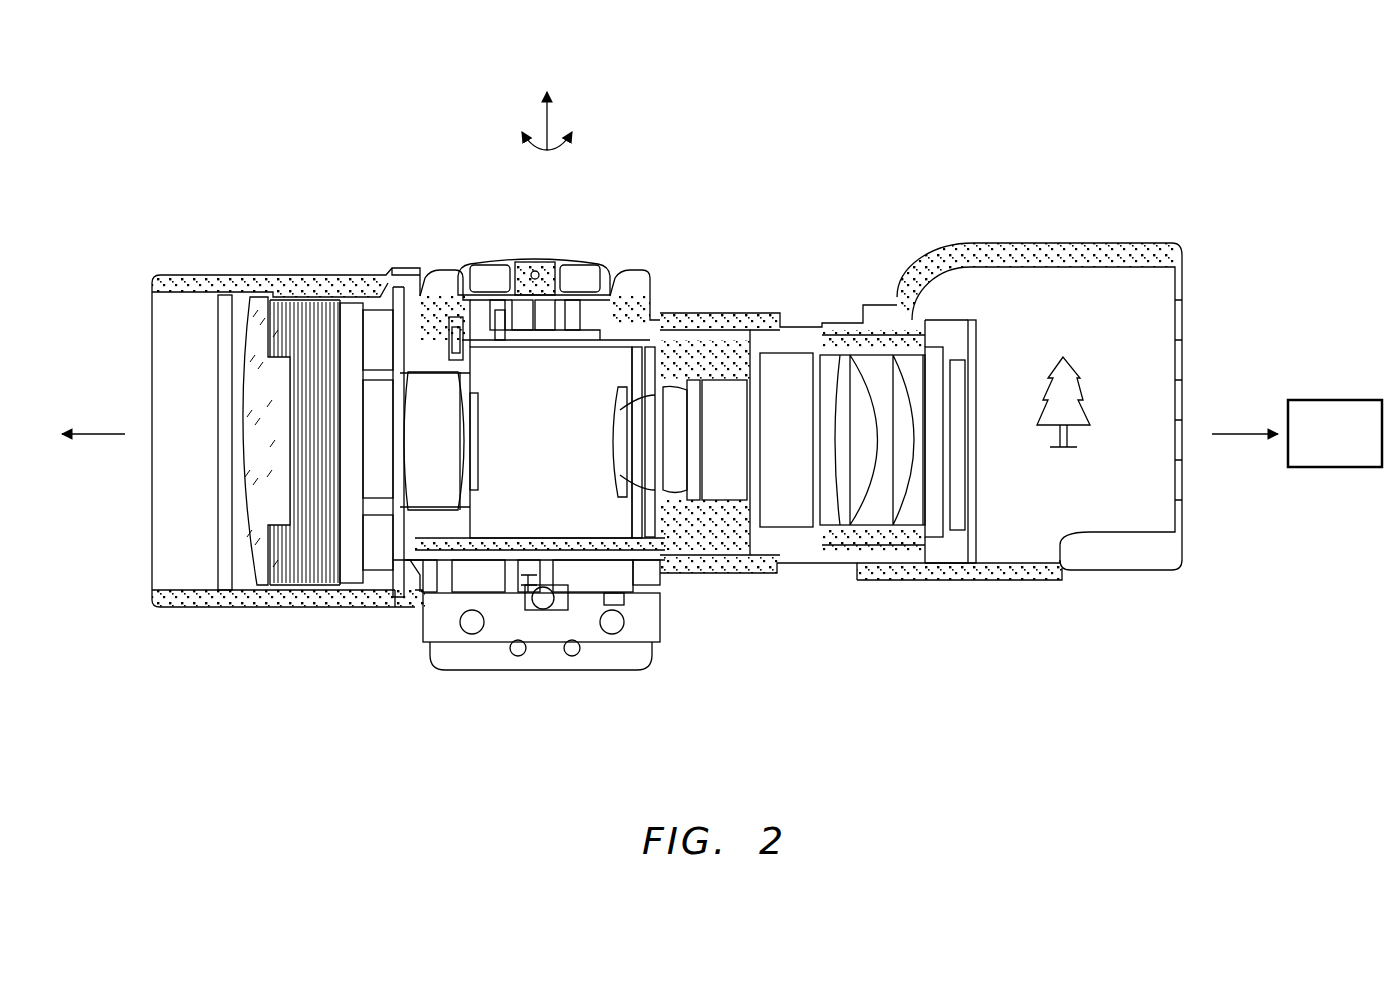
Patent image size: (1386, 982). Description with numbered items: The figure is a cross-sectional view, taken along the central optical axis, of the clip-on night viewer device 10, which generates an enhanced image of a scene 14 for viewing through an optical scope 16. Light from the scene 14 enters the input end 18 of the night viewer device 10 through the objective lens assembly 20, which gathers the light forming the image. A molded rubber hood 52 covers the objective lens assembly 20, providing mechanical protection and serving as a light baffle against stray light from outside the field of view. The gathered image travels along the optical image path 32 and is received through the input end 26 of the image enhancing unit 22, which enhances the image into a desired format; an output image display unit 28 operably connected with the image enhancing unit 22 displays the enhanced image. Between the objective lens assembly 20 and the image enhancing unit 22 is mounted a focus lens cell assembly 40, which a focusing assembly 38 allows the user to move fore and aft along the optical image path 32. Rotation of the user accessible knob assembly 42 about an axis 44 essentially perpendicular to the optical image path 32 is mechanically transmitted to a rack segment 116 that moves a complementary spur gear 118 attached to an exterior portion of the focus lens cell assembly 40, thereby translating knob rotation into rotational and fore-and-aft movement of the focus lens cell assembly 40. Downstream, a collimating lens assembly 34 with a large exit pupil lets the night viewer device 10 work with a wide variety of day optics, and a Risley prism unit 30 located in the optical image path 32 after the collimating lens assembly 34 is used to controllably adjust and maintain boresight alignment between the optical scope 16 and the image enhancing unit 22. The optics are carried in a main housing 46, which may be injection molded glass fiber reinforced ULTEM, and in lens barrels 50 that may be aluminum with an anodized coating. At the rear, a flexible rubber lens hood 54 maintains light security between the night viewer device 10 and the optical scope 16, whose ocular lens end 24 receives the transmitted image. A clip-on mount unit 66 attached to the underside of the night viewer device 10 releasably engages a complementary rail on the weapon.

The clip-on night viewer device 10 is at (722, 92).
The scene 14 is at (1083, 364).
The optical scope 16 is at (1335, 437).
The input end 18 is at (172, 266).
The objective lens assembly 20 is at (268, 494).
The image enhancing unit 22 is at (505, 500).
The ocular lens end 24 is at (1280, 410).
The input end of the image enhancing unit 26 is at (486, 362).
The output image display unit 28 is at (610, 370).
The Risley prism unit 30 is at (277, 614).
The optical image path 32 is at (92, 434).
The collimating lens assembly 34 is at (880, 330).
The focusing assembly 38 is at (580, 240).
The focus lens cell assembly 40 is at (430, 400).
The knob assembly 42 is at (533, 253).
The axis 44 is at (545, 114).
The main housing 46 is at (343, 266).
The lens barrels 50 is at (832, 312).
The molded rubber hood 52 is at (172, 602).
The flexible rubber lens hood 54 is at (1045, 258).
The clip-on mount unit 66 is at (621, 657).
The rack segment 116 is at (454, 312).
The spur gear 118 is at (396, 566).